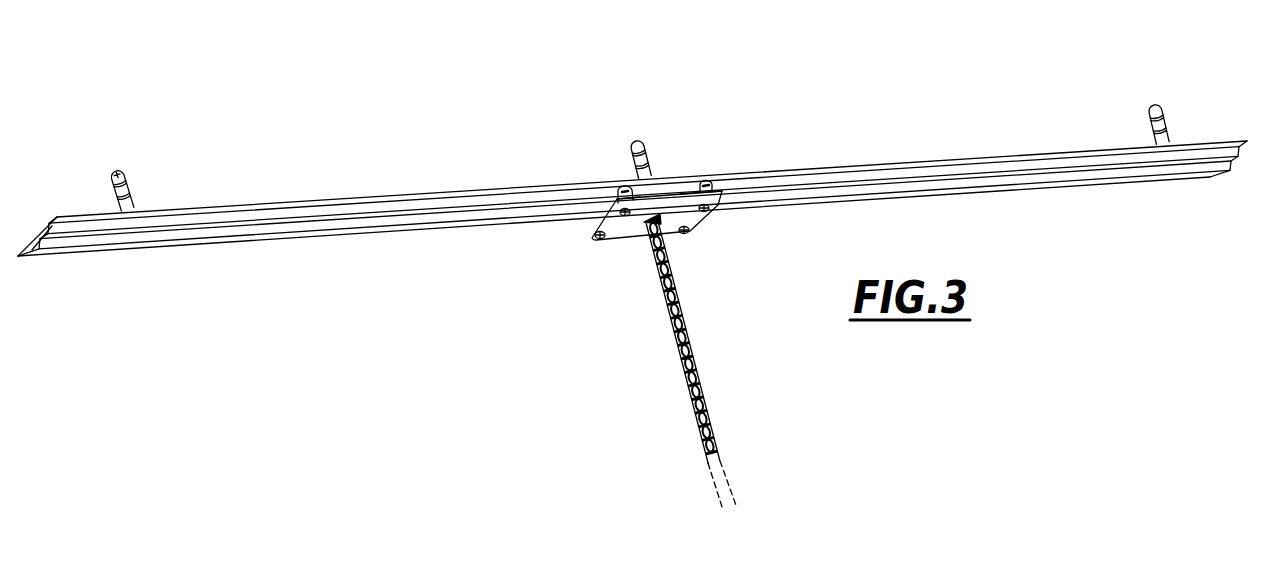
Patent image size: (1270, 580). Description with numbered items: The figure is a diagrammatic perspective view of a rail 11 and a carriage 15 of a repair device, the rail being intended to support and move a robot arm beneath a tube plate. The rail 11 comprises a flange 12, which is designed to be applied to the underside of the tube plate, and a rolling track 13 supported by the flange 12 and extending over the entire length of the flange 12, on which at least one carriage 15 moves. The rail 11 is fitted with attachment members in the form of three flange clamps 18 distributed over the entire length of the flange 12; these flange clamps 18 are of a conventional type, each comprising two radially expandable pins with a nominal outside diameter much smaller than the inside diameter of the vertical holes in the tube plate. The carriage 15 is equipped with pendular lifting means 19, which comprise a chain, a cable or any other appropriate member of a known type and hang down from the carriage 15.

The rail 11 is at (348, 192).
The flange 12 is at (918, 162).
The rolling track 13 is at (200, 234).
The carriage 15 is at (628, 233).
The flange clamps 18 is at (115, 170).
The pendular lifting means 19 is at (690, 400).